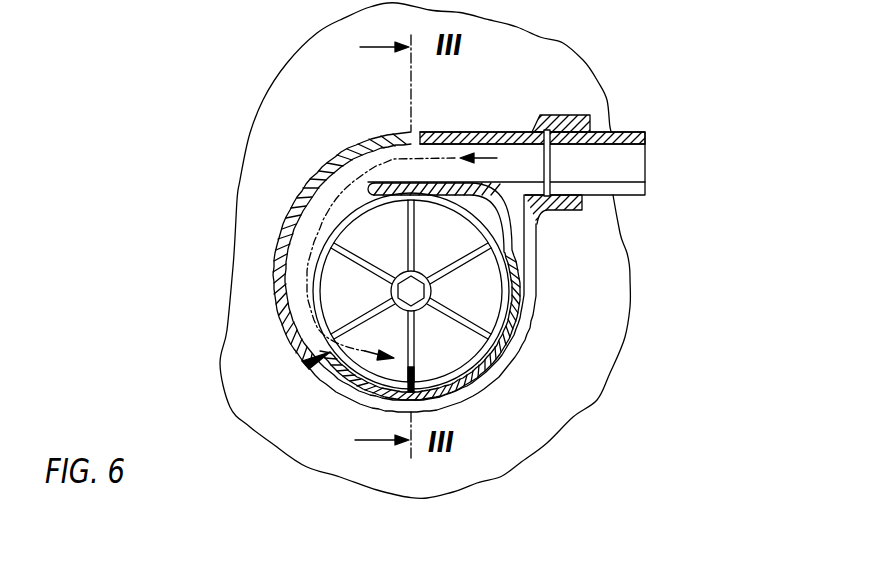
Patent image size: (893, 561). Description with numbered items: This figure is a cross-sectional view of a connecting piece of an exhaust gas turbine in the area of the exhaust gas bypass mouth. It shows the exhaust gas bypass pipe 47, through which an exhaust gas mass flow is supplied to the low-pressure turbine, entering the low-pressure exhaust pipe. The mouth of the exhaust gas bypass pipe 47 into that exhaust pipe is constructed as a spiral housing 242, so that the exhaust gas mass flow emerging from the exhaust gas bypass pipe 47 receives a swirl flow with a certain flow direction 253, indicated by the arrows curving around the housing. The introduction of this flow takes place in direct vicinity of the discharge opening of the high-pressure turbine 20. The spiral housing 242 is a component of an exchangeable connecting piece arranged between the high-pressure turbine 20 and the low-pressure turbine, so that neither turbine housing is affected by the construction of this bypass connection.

The high-pressure turbine 20 is at (628, 254).
The exhaust gas bypass pipe 47 is at (627, 132).
The spiral housing 242 is at (283, 208).
The flow direction 253 is at (280, 250).